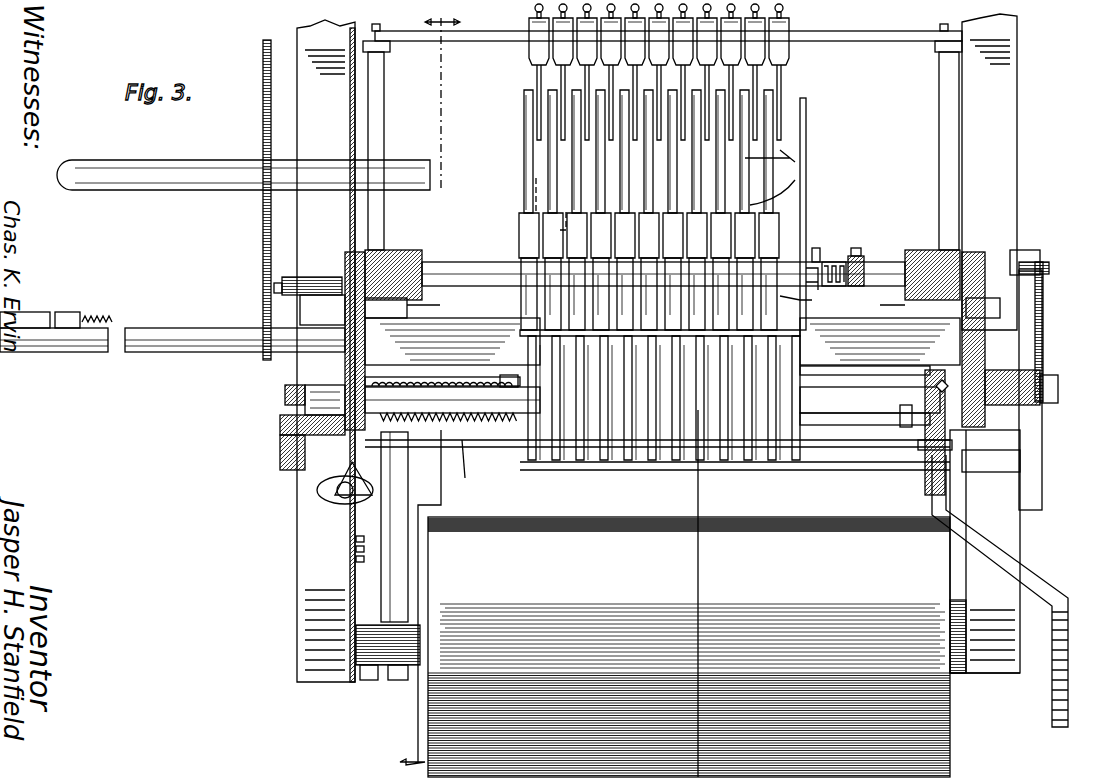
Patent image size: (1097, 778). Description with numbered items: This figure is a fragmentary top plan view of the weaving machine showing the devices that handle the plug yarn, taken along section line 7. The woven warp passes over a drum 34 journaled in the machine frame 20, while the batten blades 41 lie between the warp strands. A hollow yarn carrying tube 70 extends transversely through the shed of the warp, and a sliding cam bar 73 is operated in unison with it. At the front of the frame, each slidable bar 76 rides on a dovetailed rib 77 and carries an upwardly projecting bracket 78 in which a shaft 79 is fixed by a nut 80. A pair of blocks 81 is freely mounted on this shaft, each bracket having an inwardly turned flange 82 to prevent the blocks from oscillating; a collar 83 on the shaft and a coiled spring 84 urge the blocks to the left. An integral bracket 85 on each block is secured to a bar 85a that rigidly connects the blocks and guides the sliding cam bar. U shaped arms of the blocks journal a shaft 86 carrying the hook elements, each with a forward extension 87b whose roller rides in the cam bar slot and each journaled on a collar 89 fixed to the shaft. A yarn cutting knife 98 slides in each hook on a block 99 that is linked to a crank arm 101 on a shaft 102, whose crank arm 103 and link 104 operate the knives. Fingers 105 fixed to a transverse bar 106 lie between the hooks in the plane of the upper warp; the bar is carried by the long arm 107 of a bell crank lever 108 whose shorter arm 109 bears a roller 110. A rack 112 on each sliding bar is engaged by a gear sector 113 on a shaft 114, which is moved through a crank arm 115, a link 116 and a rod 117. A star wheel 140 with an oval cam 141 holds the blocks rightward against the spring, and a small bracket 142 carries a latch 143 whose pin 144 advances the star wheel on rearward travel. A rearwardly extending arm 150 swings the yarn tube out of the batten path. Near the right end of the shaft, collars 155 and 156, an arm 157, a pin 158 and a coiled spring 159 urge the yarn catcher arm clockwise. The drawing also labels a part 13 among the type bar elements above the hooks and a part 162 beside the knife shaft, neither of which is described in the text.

The section line 7 is at (430, 390).
The machine frame 20 is at (310, 30).
The transverse bar 106 is at (415, 32).
The long arm 107 is at (384, 92).
The yarn carrying tube 70 is at (200, 158).
The dovetailed rib 77 is at (298, 276).
The sliding cam bar 73 is at (215, 328).
The rearwardly extending arm 150 is at (276, 285).
The gear sector 113 is at (282, 290).
The slidable bar 76 is at (318, 295).
The block 81 is at (345, 376).
The bell crank lever 108 is at (400, 250).
The shaft 86 is at (456, 262).
The integral bracket 85 is at (682, 308).
The shorter arm 109 is at (656, 305).
The bar 85a is at (662, 341).
The roller 110 is at (895, 368).
The collar 83 is at (506, 375).
The shaft 102 is at (498, 403).
The rod 117 is at (400, 440).
The shaft 114 is at (848, 462).
The finger 105 is at (539, 72).
The type bar 13 is at (528, 127).
The collar 89 is at (548, 262).
The arm 157 is at (808, 120).
The yarn cutting knife 98 is at (795, 162).
The block 99 is at (770, 210).
The pin 158 is at (818, 268).
The collar 156 is at (830, 262).
The collar 155 is at (860, 256).
The coiled spring 159 is at (826, 262).
The extension 87b is at (808, 302).
The crank arm 101 is at (815, 428).
The stud 162 is at (905, 427).
The crank arm 103 is at (930, 450).
The link 104 is at (1052, 712).
The rack 112 is at (1035, 322).
The bracket 78 is at (1010, 392).
The nut 80 is at (1040, 402).
The shaft 79 is at (285, 394).
The inwardly turned flange 82 is at (975, 472).
The star wheel 140 is at (317, 490).
The oval cam 141 is at (330, 500).
The small bracket 142 is at (356, 539).
The latch 143 is at (356, 549).
The pin 144 is at (356, 559).
The crank arm 115 is at (399, 598).
The link 116 is at (366, 680).
The drum 34 is at (689, 593).
The blade 41 is at (990, 675).
The coiled spring 84 is at (461, 469).